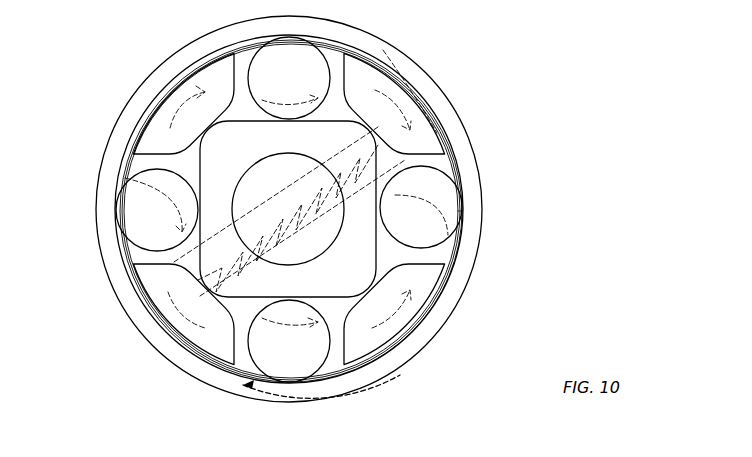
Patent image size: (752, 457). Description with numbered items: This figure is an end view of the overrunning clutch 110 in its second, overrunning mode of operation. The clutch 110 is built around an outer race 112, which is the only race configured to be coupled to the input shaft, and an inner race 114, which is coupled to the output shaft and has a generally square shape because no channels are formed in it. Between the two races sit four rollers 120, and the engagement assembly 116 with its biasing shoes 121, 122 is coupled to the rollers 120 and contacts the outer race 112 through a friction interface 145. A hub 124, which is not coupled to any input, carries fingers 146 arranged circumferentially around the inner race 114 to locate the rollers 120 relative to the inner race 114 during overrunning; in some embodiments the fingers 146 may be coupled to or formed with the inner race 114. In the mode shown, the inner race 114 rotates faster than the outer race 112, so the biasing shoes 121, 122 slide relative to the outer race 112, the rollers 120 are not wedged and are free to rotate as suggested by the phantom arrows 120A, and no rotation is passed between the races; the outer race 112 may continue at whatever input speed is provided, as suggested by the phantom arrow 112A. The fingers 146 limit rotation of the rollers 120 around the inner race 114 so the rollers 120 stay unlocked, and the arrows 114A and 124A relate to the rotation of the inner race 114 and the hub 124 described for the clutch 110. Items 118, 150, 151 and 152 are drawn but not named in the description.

The overrunning clutch 110 is at (110, 62).
The outer race 112 is at (438, 72).
The phantom arrow 112A is at (397, 372).
The inner race 114 is at (396, 70).
The solid arrow 114A is at (400, 240).
The engagement assembly 116 is at (234, 52).
The gap 118 is at (242, 62).
The rollers 120 is at (310, 70).
The phantom arrows 120A is at (290, 92).
The biasing shoe 121 is at (127, 257).
The biasing shoe 122 is at (452, 162).
The hub 124 is at (143, 163).
The phantom arrows 124A is at (177, 110).
The friction interface 145 is at (402, 62).
The fingers 146 is at (167, 107).
The hub 150 is at (330, 147).
The spring element 151 is at (222, 232).
The groove 152 is at (418, 113).